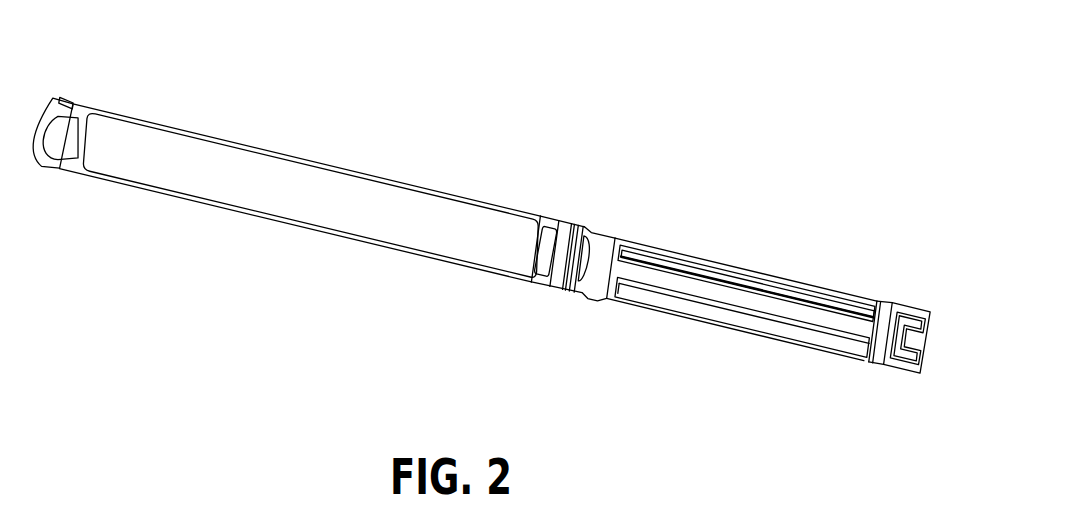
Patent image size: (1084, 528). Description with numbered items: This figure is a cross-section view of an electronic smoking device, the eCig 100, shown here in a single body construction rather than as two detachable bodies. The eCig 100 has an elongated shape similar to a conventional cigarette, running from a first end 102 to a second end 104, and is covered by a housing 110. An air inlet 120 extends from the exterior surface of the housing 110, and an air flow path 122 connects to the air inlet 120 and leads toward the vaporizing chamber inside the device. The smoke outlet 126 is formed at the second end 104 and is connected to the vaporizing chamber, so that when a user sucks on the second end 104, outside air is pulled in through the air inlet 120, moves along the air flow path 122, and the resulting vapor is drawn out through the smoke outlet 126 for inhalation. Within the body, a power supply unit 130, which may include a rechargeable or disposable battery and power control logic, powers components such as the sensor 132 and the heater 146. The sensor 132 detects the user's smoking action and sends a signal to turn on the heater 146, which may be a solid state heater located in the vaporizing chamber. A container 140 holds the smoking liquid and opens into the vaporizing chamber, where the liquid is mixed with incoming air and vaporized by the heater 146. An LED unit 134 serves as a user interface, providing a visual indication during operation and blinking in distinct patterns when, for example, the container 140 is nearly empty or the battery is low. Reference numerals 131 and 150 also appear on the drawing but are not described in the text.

The eCig 100 is at (532, 101).
The first end 102 is at (34, 112).
The second end 104 is at (923, 372).
The housing 110 is at (247, 213).
The air inlet 120 is at (590, 297).
The air flow path 122 is at (793, 317).
The smoke outlet 126 is at (913, 338).
The power supply unit 130 is at (283, 178).
The collar ring 131 is at (551, 222).
The sensor 132 is at (587, 230).
The LED unit 134 is at (70, 97).
The container 140 is at (697, 312).
The heater 146 is at (877, 357).
The end band 150 is at (895, 372).